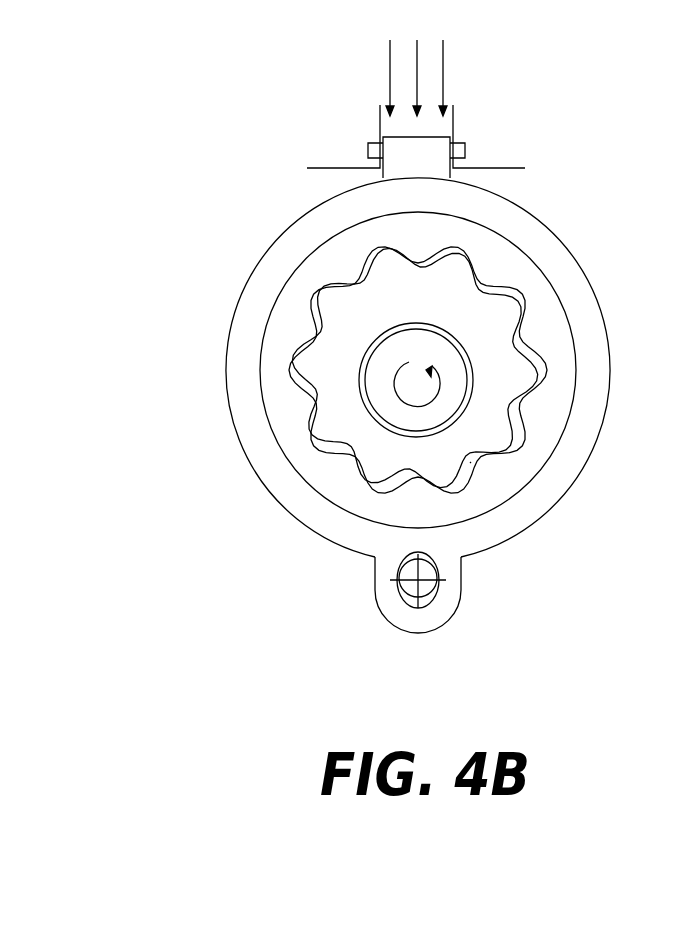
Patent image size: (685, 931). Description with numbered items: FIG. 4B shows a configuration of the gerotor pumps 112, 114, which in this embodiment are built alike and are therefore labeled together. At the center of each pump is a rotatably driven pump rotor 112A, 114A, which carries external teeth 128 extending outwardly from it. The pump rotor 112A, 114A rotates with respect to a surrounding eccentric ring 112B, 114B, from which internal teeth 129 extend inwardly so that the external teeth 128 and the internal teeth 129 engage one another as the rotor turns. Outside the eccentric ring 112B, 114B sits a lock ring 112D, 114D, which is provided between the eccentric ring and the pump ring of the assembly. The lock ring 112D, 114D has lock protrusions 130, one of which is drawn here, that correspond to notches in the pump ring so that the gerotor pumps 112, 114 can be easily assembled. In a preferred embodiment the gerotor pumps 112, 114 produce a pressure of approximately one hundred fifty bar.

The first and second plates 112, 114 is at (562, 186).
The lock protrusion 130 is at (397, 158).
The outer ring portions of plates 112D, 114D is at (243, 343).
The hub portions of plates 112B, 114B is at (335, 475).
The internal teeth 129 is at (551, 322).
The external teeth 128 is at (520, 365).
The lobed openings of plates 112A, 114A is at (470, 463).